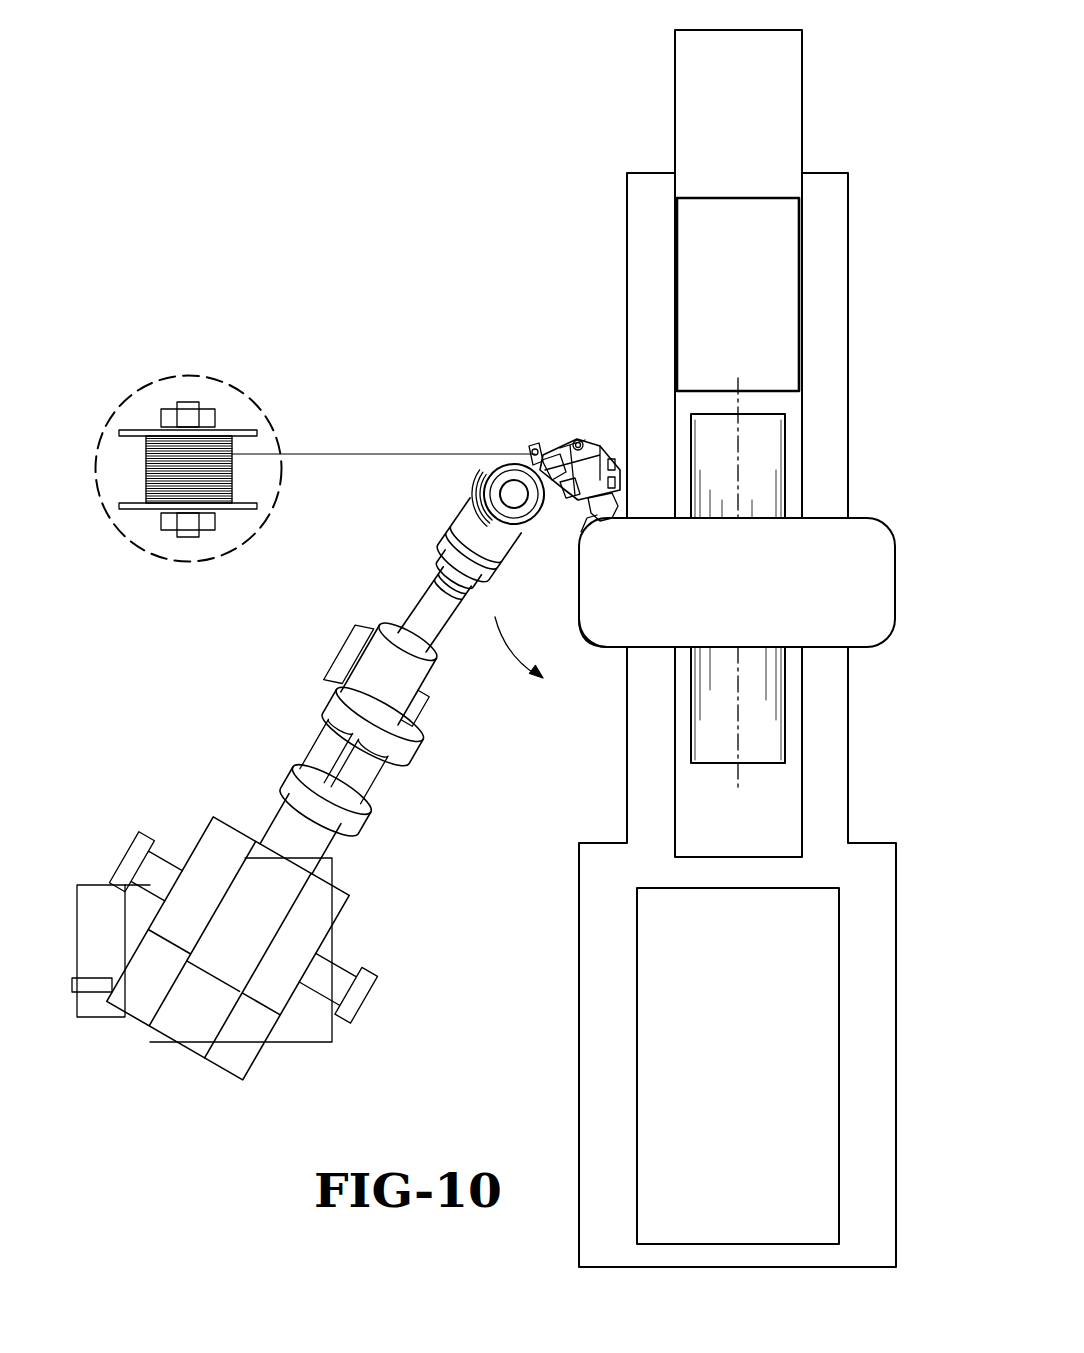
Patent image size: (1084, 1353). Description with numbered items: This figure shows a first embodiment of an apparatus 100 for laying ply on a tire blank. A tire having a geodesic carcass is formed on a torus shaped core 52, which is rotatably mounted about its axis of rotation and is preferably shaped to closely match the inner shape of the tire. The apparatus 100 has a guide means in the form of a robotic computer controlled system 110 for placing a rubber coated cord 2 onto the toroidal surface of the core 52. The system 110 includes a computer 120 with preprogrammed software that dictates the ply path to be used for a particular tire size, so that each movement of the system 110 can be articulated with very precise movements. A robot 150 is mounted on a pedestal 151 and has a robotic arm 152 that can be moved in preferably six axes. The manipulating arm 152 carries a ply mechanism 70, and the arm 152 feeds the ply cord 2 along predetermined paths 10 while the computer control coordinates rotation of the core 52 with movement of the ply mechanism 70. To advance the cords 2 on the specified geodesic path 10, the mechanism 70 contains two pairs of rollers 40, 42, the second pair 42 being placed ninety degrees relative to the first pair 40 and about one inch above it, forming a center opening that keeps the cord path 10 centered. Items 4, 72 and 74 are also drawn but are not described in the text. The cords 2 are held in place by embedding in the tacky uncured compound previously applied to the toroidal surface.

The cord 2 is at (560, 450).
The workpiece seam 4 is at (588, 640).
The path 10 is at (601, 522).
The first pair of rollers 40 is at (583, 521).
The second pair of rollers 42 is at (563, 505).
The core 52 is at (880, 521).
The ply mechanism 70 is at (596, 425).
The wire guide bracket 72 is at (537, 450).
The wire spool 74 is at (140, 430).
The apparatus 100 is at (474, 362).
The robotic computer controlled system 110 is at (266, 790).
The computer 120 is at (105, 912).
The robot 150 is at (225, 1058).
The pedestal 151 is at (297, 1032).
The robotic arm 152 is at (434, 603).